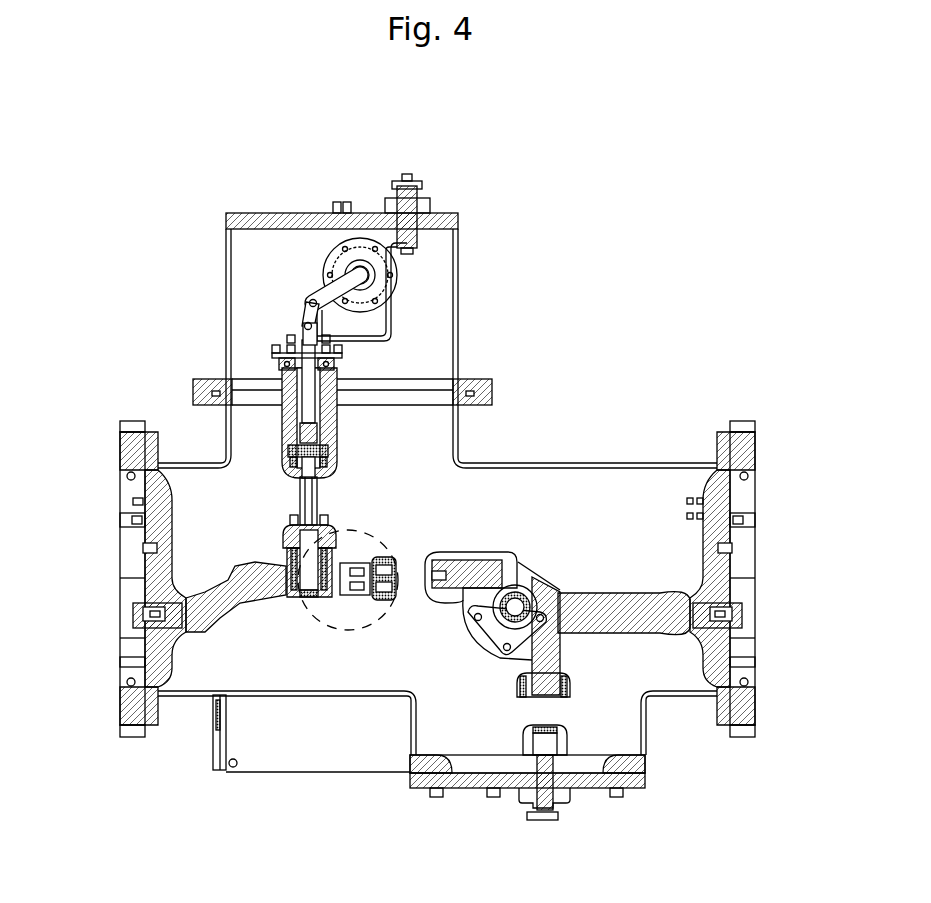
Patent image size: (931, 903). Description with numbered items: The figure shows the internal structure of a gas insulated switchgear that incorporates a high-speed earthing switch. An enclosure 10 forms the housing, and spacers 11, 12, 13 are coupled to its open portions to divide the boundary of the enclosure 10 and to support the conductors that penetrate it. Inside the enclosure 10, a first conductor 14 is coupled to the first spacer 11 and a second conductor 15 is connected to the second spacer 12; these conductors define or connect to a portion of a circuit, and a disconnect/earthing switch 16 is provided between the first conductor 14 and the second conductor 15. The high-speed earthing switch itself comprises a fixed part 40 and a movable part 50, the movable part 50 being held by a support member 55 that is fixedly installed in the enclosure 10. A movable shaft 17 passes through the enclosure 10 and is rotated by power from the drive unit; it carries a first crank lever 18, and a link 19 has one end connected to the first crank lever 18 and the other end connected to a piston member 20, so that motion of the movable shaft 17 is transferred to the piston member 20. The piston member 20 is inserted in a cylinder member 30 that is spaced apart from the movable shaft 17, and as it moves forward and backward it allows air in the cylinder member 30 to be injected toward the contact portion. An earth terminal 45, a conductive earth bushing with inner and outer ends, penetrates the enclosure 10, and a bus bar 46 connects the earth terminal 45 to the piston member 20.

The enclosure 10 is at (226, 247).
The first spacer 11 is at (123, 450).
The second spacer 12 is at (745, 452).
The spacer 13 is at (262, 213).
The first conductor 14 is at (235, 563).
The second conductor 15 is at (610, 603).
The disconnect/earthing switch 16 is at (532, 577).
The movable shaft 17 is at (360, 266).
The first crank lever 18 is at (333, 287).
The link 19 is at (303, 300).
The piston member 20 is at (345, 382).
The cylinder member 30 is at (283, 424).
The fixed part 40 is at (280, 535).
The earth terminal 45 is at (420, 195).
The bus bar 46 is at (393, 313).
The movable part 50 is at (272, 333).
The support member 55 is at (276, 355).